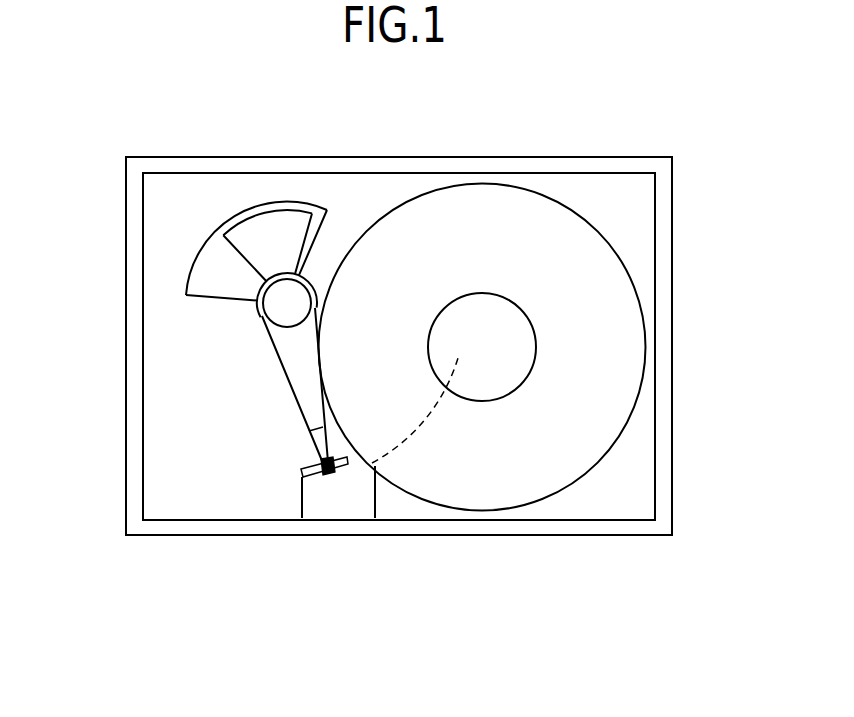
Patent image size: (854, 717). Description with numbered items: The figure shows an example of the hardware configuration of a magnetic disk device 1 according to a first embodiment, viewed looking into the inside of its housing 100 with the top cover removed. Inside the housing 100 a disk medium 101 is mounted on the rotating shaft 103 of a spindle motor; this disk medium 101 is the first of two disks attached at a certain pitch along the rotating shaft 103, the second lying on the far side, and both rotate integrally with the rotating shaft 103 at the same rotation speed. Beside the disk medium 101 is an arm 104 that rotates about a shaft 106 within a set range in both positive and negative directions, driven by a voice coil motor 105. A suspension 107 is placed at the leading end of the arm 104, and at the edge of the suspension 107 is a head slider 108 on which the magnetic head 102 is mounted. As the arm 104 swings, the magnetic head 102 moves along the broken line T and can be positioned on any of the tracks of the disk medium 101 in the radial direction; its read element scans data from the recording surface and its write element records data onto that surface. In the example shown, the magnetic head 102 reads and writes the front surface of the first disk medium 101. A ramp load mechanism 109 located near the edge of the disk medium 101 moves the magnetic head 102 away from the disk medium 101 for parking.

The magnetic disk device 1 is at (600, 104).
The housing 100 is at (648, 156).
The disk medium 101 is at (610, 307).
The magnetic head 102 is at (316, 527).
The rotating shaft 103 is at (515, 330).
The arm 104 is at (302, 370).
The voice coil motor 105 is at (206, 234).
The shaft 106 is at (278, 312).
The suspension 107 is at (311, 433).
The head slider 108 is at (321, 482).
The ramp load mechanism 109 is at (356, 502).
The broken line T is at (413, 428).